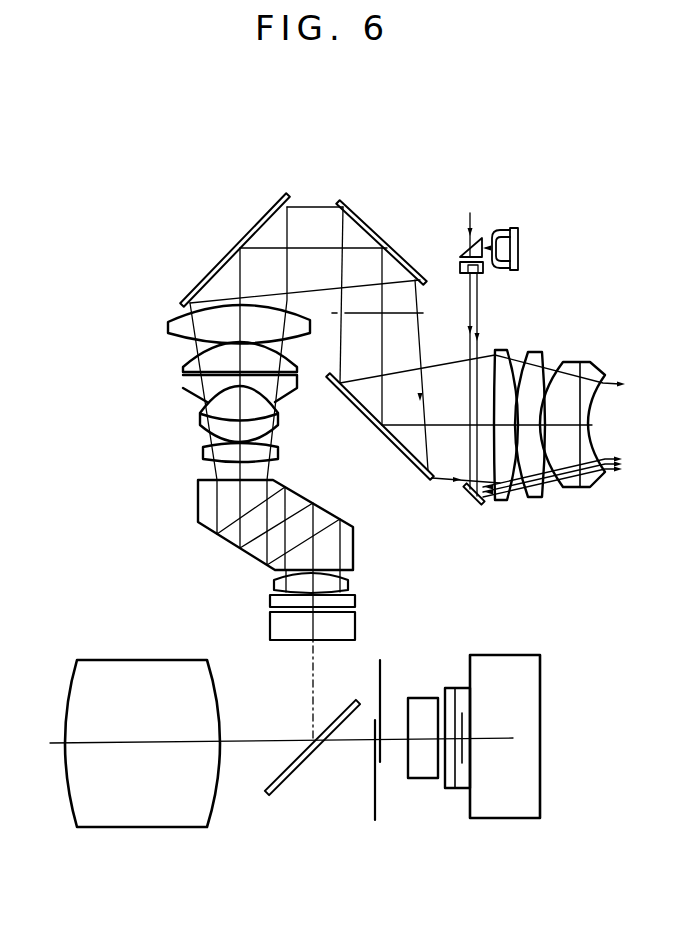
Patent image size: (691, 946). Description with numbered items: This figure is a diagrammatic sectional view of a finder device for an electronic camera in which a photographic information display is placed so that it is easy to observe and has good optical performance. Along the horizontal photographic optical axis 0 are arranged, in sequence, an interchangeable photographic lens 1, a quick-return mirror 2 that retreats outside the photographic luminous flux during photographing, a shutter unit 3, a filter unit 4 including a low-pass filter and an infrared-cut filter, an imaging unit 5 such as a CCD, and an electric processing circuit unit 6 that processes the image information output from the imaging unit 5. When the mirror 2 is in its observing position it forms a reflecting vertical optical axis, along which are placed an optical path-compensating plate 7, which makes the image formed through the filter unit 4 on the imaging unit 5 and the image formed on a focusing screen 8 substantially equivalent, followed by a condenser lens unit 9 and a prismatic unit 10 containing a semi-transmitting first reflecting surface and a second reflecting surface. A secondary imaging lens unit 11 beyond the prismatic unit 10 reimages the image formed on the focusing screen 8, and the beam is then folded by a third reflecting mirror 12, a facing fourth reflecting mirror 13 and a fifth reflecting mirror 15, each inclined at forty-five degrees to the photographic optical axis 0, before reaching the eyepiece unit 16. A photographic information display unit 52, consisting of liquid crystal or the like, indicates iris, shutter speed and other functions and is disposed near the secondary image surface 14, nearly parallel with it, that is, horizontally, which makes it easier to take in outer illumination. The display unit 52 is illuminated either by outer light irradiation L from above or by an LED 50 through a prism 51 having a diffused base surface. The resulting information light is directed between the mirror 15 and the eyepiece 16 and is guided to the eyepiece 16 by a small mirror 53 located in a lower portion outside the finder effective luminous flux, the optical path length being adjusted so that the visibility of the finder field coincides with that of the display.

The photographic optical axis 0 is at (55, 748).
The interchangeable photographic lens 1 is at (133, 827).
The quick-return mirror 2 is at (285, 790).
The shutter unit 3 is at (373, 800).
The filter unit 4 is at (422, 780).
The imaging unit 5 is at (460, 790).
The electric processing circuit unit 6 is at (532, 775).
The optical path-compensating plate 7 is at (270, 630).
The focusing screen 8 is at (270, 600).
The condenser lens unit 9 is at (273, 580).
The prismatic unit 10 is at (205, 514).
The secondary imaging lens unit 11 is at (165, 318).
The third reflecting mirror 12 is at (190, 292).
The fourth reflecting mirror 13 is at (343, 200).
The secondary image surface 14 is at (425, 312).
The fifth reflecting mirror 15 is at (430, 483).
The eyepiece unit 16 is at (588, 347).
The LED 50 is at (518, 232).
The prism 51 is at (466, 258).
The photographic information display unit 52 is at (458, 267).
The small mirror 53 is at (478, 506).
The outer light irradiation L is at (469, 212).